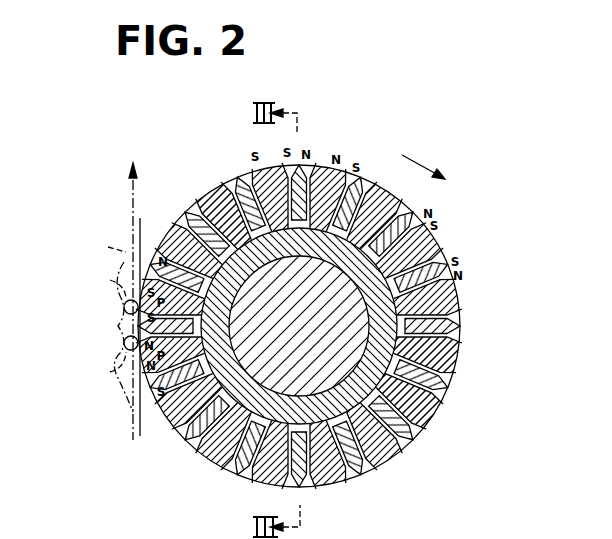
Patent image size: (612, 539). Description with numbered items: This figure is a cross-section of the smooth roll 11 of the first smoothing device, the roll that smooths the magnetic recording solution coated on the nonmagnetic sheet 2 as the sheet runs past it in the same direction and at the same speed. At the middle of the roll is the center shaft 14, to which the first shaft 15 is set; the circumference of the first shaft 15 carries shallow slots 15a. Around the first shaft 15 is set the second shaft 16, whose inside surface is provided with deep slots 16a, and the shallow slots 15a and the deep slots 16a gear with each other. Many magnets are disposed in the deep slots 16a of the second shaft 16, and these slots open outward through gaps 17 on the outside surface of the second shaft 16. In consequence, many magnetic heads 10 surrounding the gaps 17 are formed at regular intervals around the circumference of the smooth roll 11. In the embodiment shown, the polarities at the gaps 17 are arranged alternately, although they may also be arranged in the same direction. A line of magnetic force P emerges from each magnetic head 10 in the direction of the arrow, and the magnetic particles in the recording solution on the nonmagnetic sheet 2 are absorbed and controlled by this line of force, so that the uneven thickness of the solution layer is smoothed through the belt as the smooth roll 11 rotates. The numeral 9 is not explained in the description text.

The nonmagnetic sheet 2 is at (114, 301).
The spacer plate 9 is at (400, 420).
The magnetic head 10 is at (437, 222).
The smooth roll 11 is at (451, 390).
The center shaft 14 is at (308, 382).
The first shaft 15 is at (238, 462).
The shallow slots 15a is at (452, 312).
The second shaft 16 is at (445, 350).
The deep slots 16a is at (228, 213).
The gaps 17 is at (402, 410).